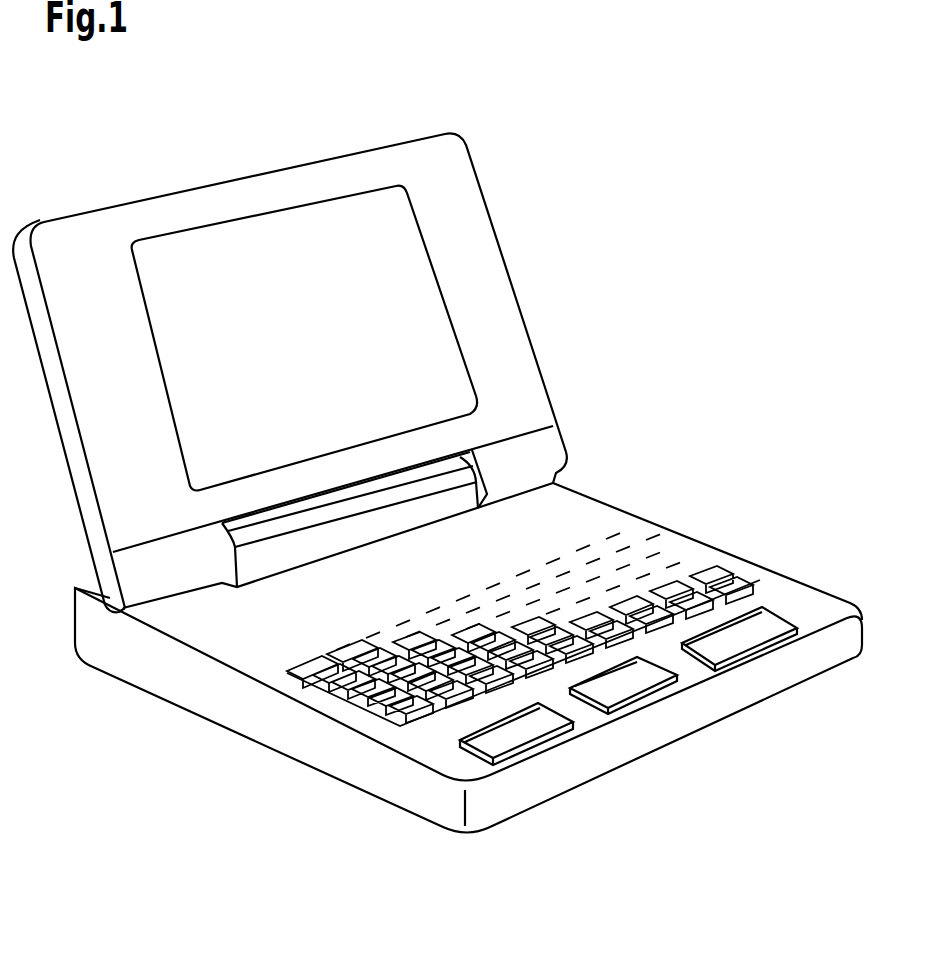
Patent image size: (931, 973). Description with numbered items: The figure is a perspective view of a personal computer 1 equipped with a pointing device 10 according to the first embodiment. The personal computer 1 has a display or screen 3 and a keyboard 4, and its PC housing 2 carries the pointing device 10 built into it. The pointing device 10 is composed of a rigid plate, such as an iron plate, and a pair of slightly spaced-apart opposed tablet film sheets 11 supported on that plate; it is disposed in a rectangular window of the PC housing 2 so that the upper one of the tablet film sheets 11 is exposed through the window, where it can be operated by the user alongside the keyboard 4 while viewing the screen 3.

The personal computer 1 is at (660, 364).
The PC housing 2 is at (278, 620).
The display or screen 3 is at (408, 238).
The keyboard 4 is at (367, 697).
The pointing device 10 is at (623, 685).
The tablet film sheets 11 is at (635, 688).